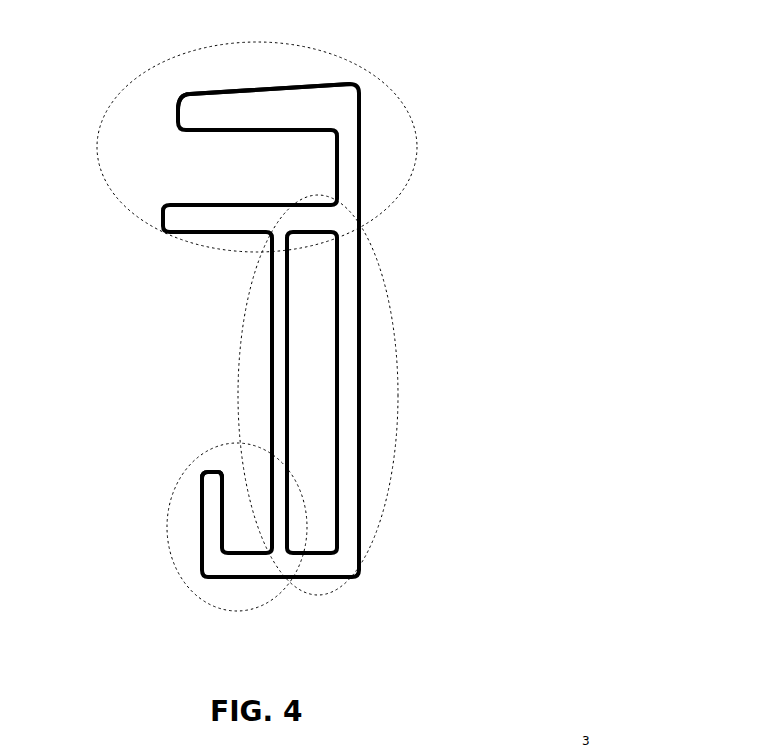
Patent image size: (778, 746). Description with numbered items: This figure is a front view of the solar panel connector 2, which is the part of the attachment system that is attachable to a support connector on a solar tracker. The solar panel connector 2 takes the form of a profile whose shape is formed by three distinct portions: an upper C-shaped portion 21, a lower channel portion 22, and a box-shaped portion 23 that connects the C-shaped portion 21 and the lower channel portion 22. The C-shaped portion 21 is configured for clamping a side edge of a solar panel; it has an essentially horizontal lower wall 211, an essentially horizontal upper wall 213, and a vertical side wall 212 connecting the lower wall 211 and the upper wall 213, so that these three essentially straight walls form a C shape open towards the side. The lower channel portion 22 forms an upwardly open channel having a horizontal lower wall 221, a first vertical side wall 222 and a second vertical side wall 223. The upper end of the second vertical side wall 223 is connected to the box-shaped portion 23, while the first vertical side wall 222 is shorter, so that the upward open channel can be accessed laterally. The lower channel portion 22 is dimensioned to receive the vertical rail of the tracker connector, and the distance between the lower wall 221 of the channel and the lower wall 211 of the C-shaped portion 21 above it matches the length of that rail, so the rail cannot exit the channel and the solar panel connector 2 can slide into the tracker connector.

The solar panel connector 2 is at (617, 148).
The C-shaped portion 21 is at (377, 80).
The lower wall 211 is at (237, 222).
The side wall 212 is at (343, 160).
The upper wall 213 is at (228, 110).
The lower channel portion 22 is at (182, 586).
The lower wall 221 is at (235, 562).
The first vertical side wall 222 is at (200, 505).
The second vertical side wall 223 is at (283, 515).
The box-shaped portion 23 is at (397, 412).